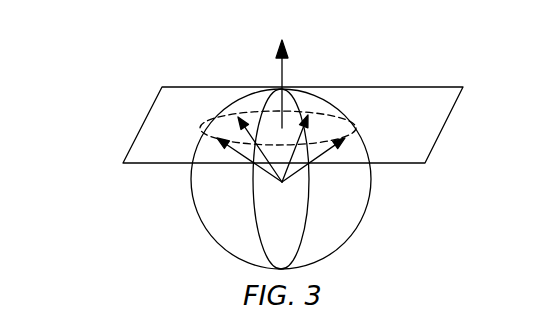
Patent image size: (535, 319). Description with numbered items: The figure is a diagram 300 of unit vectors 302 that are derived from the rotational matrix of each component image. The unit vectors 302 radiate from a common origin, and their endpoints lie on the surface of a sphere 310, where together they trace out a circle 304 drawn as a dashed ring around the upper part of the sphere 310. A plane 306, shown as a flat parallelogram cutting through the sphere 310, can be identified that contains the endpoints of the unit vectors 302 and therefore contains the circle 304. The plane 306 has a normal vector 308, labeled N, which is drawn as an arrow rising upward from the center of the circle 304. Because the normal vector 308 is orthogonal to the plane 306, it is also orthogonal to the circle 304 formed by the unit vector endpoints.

The diagram 300 is at (132, 40).
The unit vectors 302 is at (254, 174).
The circle 304 is at (218, 130).
The plane 306 is at (450, 120).
The normal vector 308 is at (282, 75).
The sphere 310 is at (364, 241).